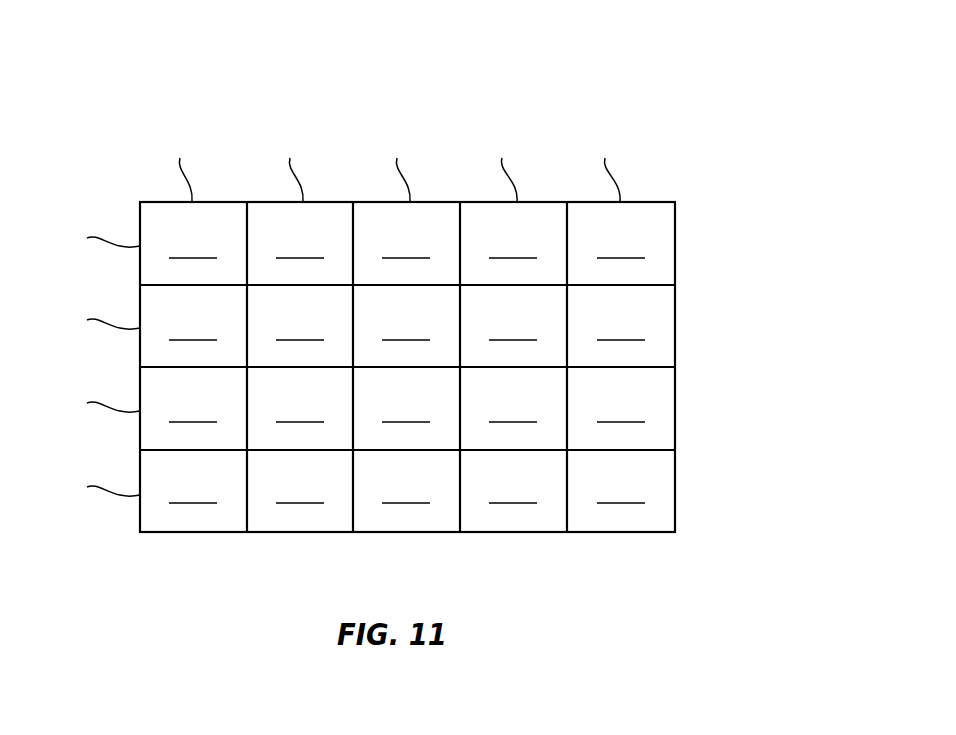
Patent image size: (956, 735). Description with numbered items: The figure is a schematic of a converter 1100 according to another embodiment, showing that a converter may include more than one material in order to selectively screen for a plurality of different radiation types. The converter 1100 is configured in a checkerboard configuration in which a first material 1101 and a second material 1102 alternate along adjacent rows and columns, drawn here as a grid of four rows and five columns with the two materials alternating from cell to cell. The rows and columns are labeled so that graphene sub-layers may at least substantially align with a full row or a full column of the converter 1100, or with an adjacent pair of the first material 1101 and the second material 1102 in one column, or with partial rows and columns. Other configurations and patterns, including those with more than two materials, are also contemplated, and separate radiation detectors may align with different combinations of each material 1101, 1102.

The converter 1100 is at (472, 108).
The first material 1101 is at (407, 368).
The second material 1102 is at (407, 368).